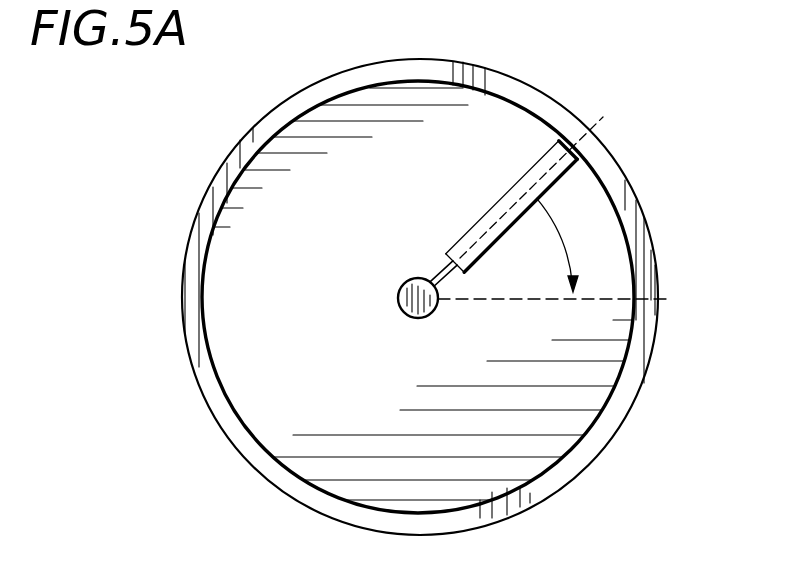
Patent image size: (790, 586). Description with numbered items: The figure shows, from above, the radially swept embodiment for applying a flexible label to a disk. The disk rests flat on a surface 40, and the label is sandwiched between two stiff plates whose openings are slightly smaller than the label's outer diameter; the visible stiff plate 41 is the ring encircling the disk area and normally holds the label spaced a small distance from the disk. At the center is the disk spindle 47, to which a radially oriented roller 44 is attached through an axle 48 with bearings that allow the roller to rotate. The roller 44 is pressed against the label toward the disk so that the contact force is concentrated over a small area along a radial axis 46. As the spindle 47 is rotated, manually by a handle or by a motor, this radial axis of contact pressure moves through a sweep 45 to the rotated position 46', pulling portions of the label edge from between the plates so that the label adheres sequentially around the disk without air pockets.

The surface 40 is at (388, 425).
The stiff plate 41 is at (535, 95).
The radially oriented roller 44 is at (505, 205).
The sweep 45 is at (541, 205).
The radial axis 46 is at (548, 176).
The radial axis 46' is at (578, 302).
The disk spindle 47 is at (398, 296).
The axle 48 is at (440, 270).